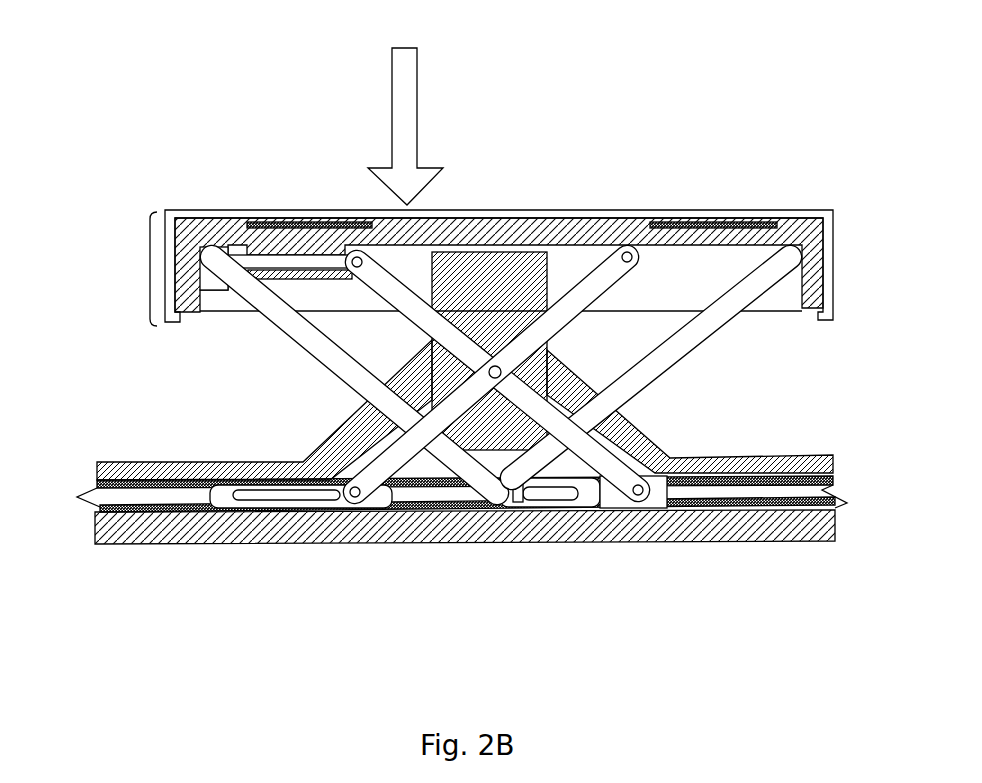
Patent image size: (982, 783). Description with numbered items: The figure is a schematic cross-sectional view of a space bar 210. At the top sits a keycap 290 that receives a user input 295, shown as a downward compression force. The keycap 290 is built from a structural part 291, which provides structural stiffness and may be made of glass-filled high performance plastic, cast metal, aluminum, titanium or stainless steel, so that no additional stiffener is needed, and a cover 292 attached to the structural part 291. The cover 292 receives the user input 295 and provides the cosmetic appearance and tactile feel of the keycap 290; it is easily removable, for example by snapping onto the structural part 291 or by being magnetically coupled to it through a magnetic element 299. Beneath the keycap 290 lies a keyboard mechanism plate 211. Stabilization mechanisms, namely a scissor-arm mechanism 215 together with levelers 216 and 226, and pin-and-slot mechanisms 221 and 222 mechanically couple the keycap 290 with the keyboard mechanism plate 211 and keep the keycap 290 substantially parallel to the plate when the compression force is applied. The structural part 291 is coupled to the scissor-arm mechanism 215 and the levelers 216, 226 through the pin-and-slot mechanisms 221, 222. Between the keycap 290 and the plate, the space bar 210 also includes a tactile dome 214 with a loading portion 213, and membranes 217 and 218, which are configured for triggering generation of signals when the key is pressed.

The space bar 210 is at (259, 118).
The keyboard mechanism plate 211 is at (510, 530).
The loading portion 213 is at (505, 442).
The tactile dome 214 is at (562, 367).
The scissor-arm mechanism 215 is at (620, 470).
The leveler 216 is at (717, 318).
The membrane 217 is at (748, 465).
The membrane 218 is at (750, 498).
The pin-and-slot mechanism 221 is at (315, 262).
The pin-and-slot mechanism 222 is at (340, 495).
The leveler 226 is at (300, 327).
The keycap 290 is at (150, 270).
The structural part 291 is at (523, 225).
The cover 292 is at (617, 216).
The user input 295 is at (410, 95).
The magnetic element 299 is at (720, 216).